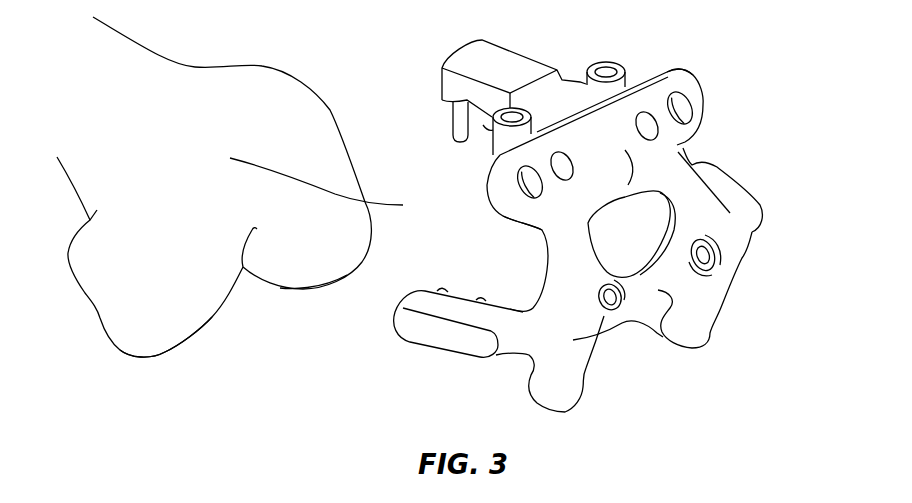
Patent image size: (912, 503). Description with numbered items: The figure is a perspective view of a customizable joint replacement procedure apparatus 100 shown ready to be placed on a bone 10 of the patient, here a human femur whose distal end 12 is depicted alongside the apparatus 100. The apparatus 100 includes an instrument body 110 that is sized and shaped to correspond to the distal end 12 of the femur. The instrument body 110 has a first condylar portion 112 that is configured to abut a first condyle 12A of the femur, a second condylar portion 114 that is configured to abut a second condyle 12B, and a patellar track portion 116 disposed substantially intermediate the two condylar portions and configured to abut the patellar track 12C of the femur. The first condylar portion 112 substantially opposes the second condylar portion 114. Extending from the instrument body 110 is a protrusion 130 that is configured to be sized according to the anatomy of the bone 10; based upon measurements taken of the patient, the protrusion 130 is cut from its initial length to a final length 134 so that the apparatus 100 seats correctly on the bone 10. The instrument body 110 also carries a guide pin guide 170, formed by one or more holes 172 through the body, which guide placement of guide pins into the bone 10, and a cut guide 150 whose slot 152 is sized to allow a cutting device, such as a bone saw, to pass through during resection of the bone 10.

The bone 10 is at (135, 57).
The distal end 12 is at (287, 95).
The first condyle 12A is at (322, 260).
The second condyle 12B is at (177, 327).
The patellar track 12C is at (370, 204).
The joint replacement procedure apparatus 100 is at (790, 107).
The instrument body 110 is at (628, 315).
The first condylar portion 112 is at (735, 192).
The second condylar portion 114 is at (445, 338).
The patellar track portion 116 is at (477, 55).
The protrusion 130 is at (460, 142).
The final length 134 is at (452, 123).
The cut guide 150 is at (705, 96).
The slot 152 is at (670, 68).
The guide pin guide 170 is at (442, 77).
The hole 172 is at (450, 112).